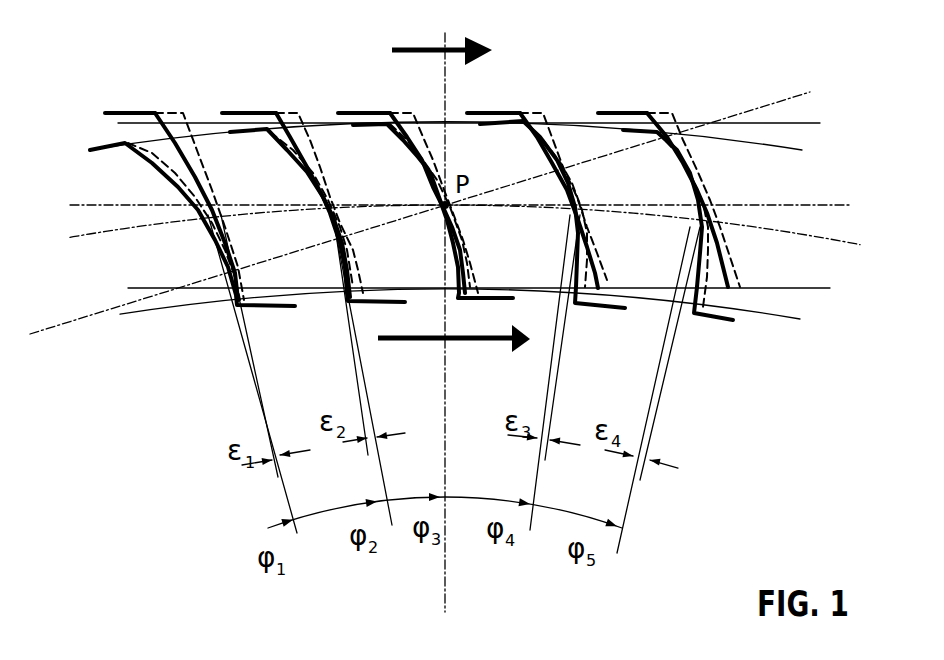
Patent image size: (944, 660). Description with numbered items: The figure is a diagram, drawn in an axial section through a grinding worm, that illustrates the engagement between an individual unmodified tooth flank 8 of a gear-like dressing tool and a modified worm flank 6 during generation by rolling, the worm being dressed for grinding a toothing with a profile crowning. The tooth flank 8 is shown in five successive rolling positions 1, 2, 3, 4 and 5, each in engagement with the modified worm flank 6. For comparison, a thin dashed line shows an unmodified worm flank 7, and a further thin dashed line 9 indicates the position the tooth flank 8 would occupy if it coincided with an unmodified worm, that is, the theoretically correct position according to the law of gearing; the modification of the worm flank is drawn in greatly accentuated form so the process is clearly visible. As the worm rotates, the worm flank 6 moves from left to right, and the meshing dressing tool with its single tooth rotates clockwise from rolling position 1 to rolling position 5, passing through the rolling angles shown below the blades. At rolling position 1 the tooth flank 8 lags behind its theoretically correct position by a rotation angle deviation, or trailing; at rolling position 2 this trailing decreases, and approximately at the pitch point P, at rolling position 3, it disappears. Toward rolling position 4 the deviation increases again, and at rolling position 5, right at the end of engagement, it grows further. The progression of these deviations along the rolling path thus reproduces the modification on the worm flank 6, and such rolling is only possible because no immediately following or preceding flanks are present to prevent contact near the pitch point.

The rolling position 1 is at (158, 169).
The rolling position 2 is at (292, 156).
The rolling position 3 is at (416, 151).
The rolling position 4 is at (553, 153).
The rolling position 5 is at (681, 162).
The modified worm flank 6 is at (172, 128).
The unmodified worm flank 7 is at (203, 173).
The tooth flank 8 is at (182, 195).
The line 9 is at (708, 278).